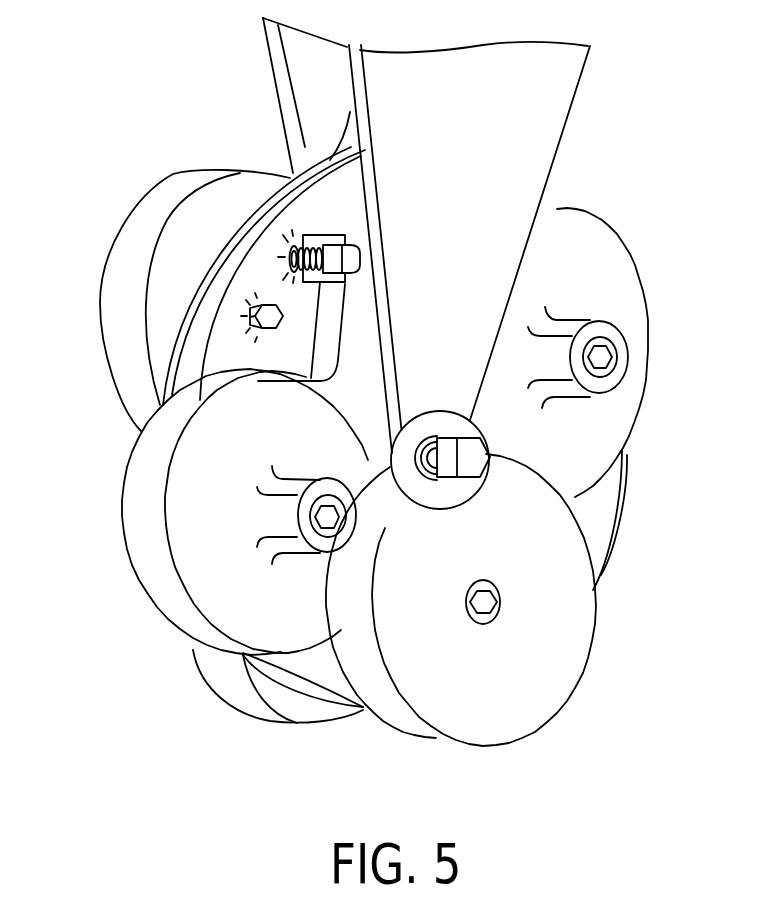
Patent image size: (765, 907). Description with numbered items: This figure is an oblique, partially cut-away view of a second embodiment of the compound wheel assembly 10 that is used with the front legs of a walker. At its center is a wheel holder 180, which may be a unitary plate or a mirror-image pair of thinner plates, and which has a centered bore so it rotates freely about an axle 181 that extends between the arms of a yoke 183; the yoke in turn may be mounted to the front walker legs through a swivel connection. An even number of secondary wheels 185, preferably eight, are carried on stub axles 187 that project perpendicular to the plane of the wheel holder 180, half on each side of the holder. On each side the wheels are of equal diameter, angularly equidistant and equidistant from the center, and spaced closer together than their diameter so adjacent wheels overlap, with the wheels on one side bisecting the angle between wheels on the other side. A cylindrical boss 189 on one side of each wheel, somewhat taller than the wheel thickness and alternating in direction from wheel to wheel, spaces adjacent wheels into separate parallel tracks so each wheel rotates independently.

The compound wheel assembly 10 is at (166, 118).
The central wheel holder 180 is at (287, 173).
The axle 181 is at (473, 443).
The yoke 183 is at (557, 114).
The secondary wheels 185 is at (139, 463).
The stub axles 187 is at (342, 258).
The boss 189 is at (323, 548).